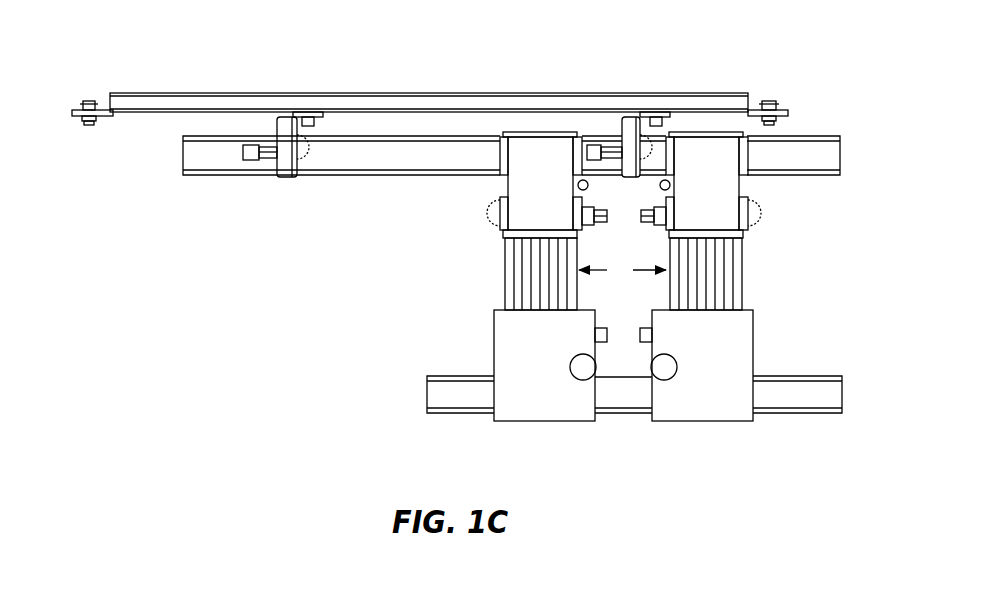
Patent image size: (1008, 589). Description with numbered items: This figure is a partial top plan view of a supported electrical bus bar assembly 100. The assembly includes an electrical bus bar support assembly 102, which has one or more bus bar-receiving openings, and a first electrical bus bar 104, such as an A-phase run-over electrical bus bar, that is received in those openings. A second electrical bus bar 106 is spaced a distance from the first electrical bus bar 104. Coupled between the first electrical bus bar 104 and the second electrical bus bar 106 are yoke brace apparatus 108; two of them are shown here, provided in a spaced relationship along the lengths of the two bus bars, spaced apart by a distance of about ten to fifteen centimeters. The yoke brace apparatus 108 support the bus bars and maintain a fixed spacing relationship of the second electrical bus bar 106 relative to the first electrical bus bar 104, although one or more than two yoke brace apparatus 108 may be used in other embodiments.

The supported electrical bus bar assembly 100 is at (460, 247).
The electrical bus bar support assembly 102 is at (474, 91).
The first electrical bus bar 104 is at (214, 175).
The second electrical bus bar 106 is at (790, 416).
The yoke brace apparatus 108 is at (468, 259).